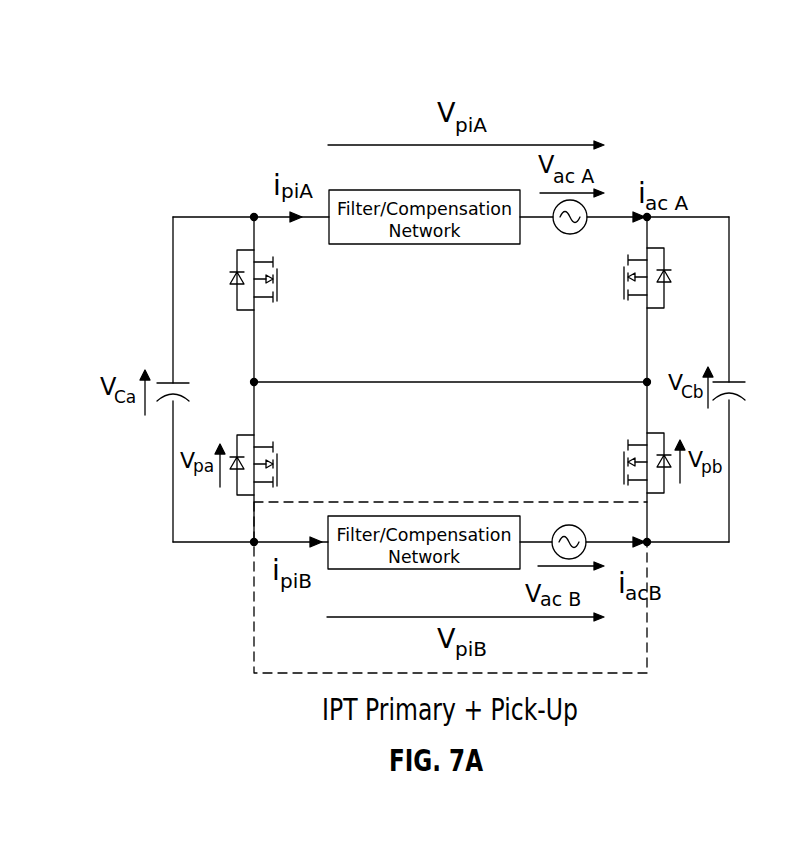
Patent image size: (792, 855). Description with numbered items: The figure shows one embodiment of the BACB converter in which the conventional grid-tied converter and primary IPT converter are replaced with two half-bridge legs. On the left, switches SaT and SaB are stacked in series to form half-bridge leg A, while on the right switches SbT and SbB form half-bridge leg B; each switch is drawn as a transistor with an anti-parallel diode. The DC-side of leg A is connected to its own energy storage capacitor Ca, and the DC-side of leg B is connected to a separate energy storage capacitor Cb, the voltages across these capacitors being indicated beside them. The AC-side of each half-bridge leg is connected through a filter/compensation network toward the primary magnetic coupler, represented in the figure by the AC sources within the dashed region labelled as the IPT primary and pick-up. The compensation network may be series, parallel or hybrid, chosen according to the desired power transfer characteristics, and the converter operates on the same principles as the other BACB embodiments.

The energy storage capacitor Ca is at (189, 392).
The energy storage capacitor Cb is at (745, 390).
The switch SaT is at (316, 298).
The switch SaB is at (316, 483).
The switch SbT is at (622, 297).
The switch SbB is at (623, 480).